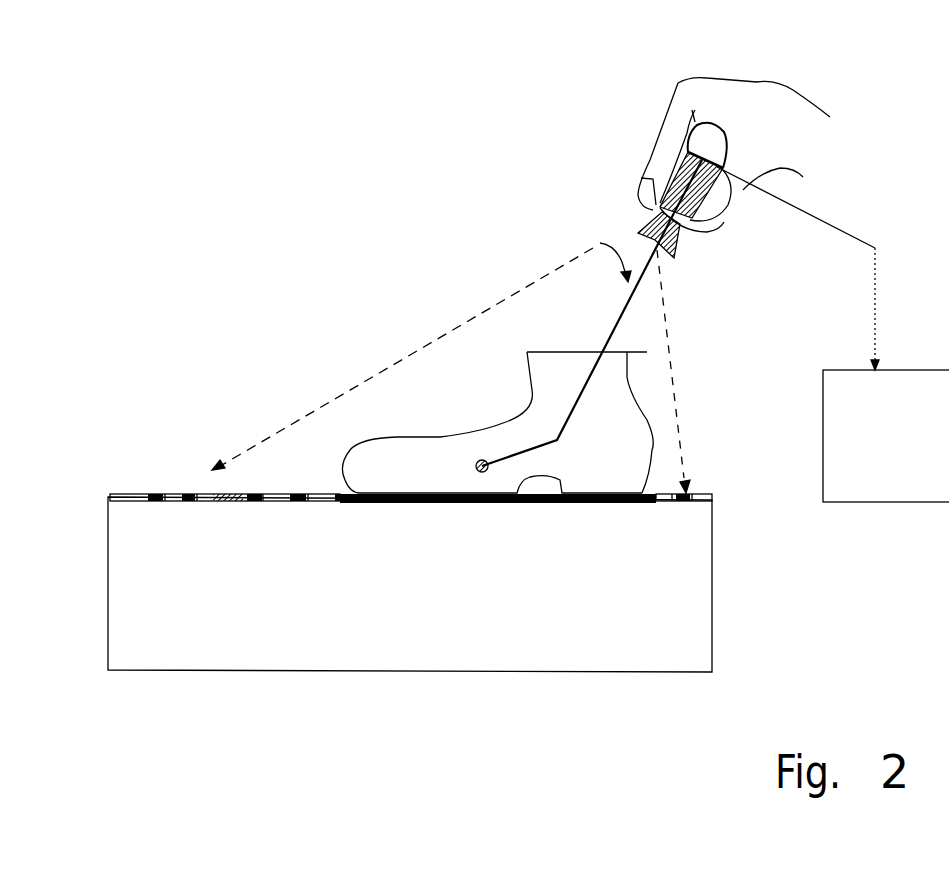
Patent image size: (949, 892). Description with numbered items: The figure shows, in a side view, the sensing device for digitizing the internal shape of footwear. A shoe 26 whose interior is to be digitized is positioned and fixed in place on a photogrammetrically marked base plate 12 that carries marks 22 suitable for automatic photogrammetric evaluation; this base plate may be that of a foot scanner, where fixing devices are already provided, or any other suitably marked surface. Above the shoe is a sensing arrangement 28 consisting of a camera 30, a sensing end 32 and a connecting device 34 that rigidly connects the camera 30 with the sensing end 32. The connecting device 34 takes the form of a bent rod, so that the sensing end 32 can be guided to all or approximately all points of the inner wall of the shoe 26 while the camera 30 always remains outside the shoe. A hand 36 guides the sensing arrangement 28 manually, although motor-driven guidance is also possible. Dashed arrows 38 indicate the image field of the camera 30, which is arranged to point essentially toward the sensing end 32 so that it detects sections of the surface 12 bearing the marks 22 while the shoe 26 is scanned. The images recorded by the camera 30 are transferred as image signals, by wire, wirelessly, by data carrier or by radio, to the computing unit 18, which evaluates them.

The base plate 12 is at (110, 492).
The computing unit 18 is at (913, 429).
The marks 22 is at (193, 490).
The shoe 26 is at (636, 444).
The sensing arrangement 28 is at (610, 238).
The camera 30 is at (683, 228).
The sensing end 32 is at (480, 460).
The connecting device 34 is at (613, 330).
The hand 36 is at (760, 92).
The dashed arrows 38 is at (410, 357).